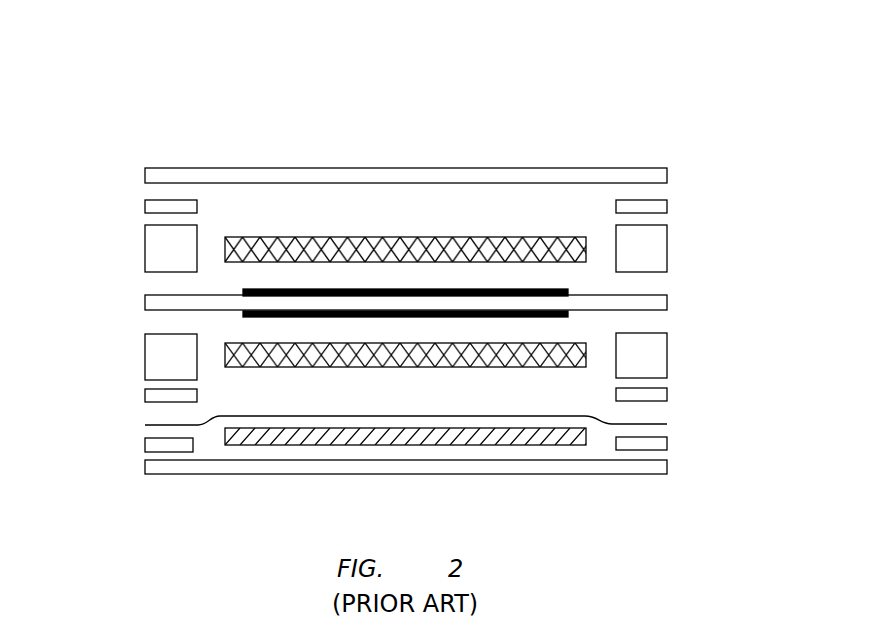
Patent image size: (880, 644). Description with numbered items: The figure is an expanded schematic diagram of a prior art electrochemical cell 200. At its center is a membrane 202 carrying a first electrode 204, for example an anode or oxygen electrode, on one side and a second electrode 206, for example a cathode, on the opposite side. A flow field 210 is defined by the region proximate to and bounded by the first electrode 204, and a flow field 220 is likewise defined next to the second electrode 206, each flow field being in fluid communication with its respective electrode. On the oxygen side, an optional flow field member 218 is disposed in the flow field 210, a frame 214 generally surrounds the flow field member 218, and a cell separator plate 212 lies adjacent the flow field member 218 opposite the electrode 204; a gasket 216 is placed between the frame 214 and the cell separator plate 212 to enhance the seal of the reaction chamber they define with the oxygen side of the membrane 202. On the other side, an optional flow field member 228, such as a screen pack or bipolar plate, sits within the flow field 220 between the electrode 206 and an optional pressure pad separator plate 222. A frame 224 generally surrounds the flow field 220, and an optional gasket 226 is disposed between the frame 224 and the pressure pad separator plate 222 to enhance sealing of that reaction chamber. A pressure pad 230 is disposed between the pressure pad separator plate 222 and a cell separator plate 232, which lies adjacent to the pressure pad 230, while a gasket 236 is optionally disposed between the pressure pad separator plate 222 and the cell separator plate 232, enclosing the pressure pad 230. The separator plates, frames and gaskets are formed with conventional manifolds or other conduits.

The cell 200 is at (183, 113).
The membrane 202 is at (667, 302).
The first electrode 204 is at (243, 300).
The second electrode 206 is at (243, 312).
The flow field 210 is at (405, 224).
The cell separator plate 212 is at (667, 174).
The frame 214 is at (667, 247).
The gasket 216 is at (145, 206).
The flow field member 218 is at (460, 240).
The flow field 220 is at (405, 334).
The pressure pad separator plate 222 is at (663, 424).
The frame 224 is at (667, 355).
The gasket 226 is at (145, 396).
The flow field member 228 is at (427, 343).
The pressure pad 230 is at (585, 445).
The cell separator plate 232 is at (667, 466).
The gasket 236 is at (145, 445).